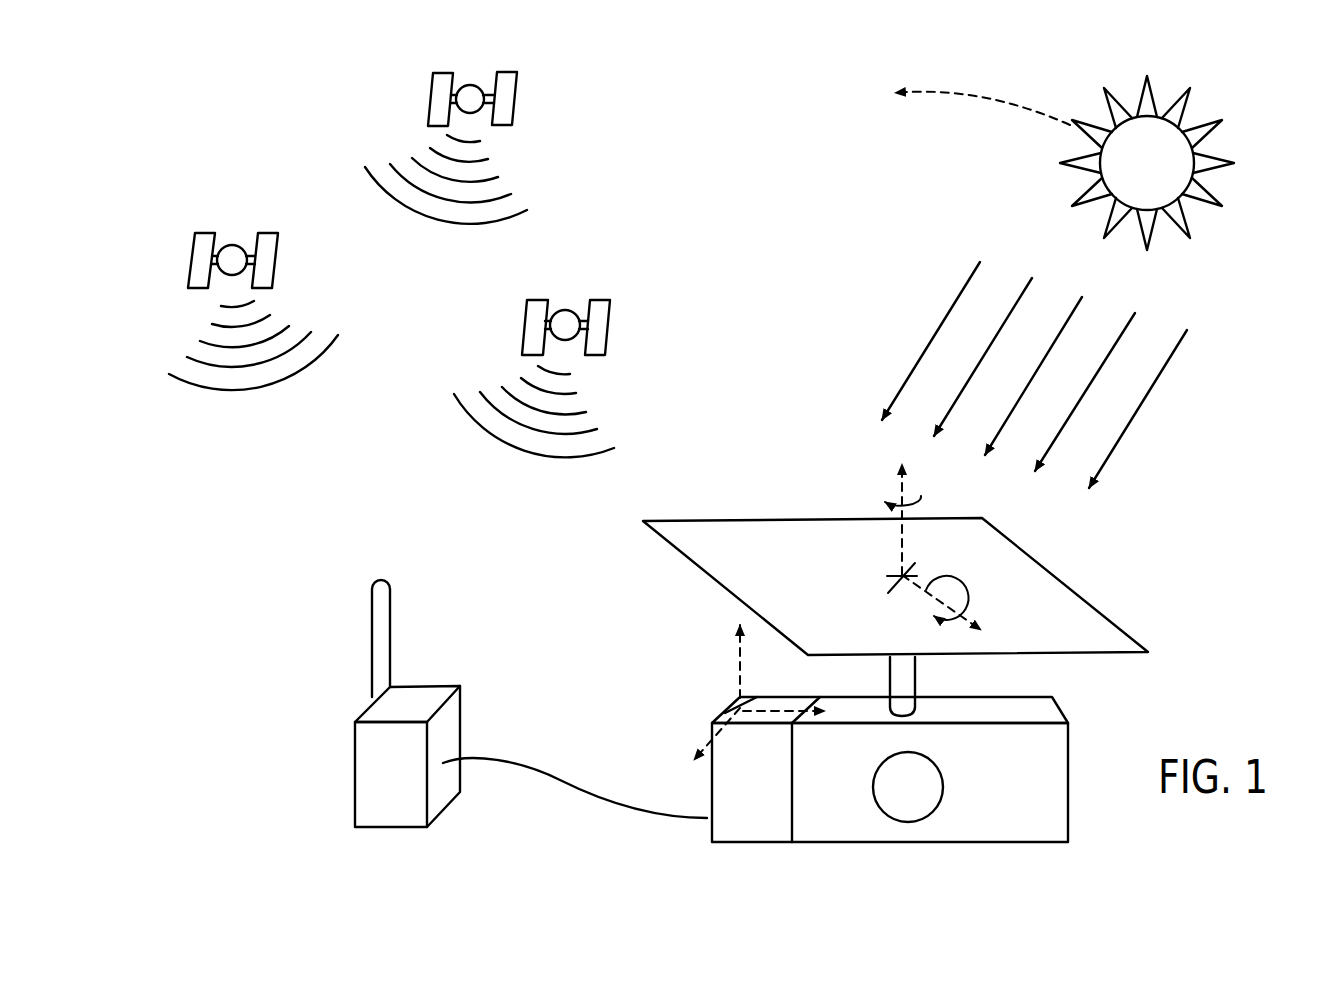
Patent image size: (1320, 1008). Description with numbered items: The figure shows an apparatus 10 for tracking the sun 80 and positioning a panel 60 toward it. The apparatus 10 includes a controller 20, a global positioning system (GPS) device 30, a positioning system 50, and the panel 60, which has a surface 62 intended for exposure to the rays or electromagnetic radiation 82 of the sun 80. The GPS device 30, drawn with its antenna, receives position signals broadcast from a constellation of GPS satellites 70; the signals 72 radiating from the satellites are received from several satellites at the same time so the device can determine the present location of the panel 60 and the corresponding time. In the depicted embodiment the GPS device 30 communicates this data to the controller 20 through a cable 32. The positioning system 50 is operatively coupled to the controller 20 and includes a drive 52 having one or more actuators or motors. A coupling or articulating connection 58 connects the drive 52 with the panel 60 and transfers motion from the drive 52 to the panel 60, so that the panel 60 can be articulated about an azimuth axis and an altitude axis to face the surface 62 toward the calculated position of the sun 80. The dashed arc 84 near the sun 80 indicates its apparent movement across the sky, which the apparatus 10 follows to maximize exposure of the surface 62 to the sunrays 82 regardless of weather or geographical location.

The apparatus 10 is at (541, 595).
The controller 20 is at (737, 843).
The global positioning system (GPS) device 30 is at (323, 638).
The cable 32 is at (600, 798).
The positioning system 50 is at (995, 842).
The drive 52 is at (907, 823).
The coupling or articulating connection 58 is at (907, 690).
The panel 60 is at (710, 520).
The surface 62 is at (822, 528).
The satellites 70 is at (290, 148).
The satellite signals 72 is at (340, 352).
The sun 80 is at (1240, 128).
The rays or electromagnetic radiation 82 is at (951, 296).
The sun path 84 is at (982, 97).